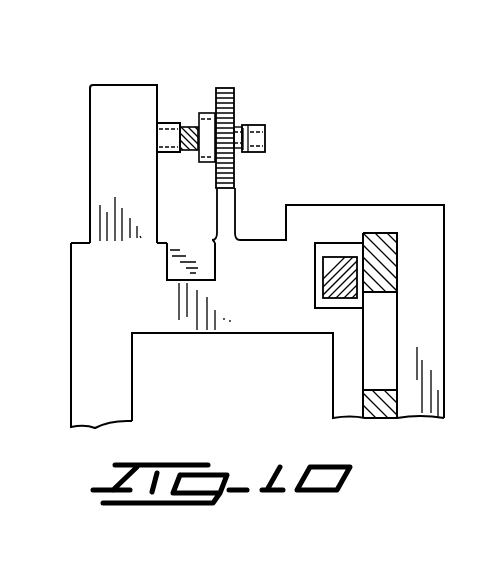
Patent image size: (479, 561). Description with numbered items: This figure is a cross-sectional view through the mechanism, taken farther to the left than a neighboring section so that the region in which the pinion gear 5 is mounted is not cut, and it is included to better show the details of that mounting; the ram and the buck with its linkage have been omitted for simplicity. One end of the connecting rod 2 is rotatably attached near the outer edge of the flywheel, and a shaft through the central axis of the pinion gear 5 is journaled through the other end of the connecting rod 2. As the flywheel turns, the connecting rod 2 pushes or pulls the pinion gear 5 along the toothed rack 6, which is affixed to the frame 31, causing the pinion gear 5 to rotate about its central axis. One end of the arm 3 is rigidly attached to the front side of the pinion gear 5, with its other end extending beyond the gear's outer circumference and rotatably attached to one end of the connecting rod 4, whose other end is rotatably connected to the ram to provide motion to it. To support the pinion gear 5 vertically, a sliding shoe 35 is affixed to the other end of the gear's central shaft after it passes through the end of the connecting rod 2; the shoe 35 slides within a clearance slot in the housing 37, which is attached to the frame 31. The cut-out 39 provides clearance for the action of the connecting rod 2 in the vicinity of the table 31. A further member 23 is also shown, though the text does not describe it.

The connecting rod 2 is at (188, 127).
The arm 3 is at (240, 124).
The connecting rod 4 is at (265, 133).
The pinion gear 5 is at (224, 88).
The toothed rack 6 is at (238, 193).
The guide rail 23 is at (337, 280).
The frame 31 is at (395, 270).
The sliding shoe 35 is at (171, 153).
The housing 37 is at (121, 87).
The cut-out 39 is at (178, 275).